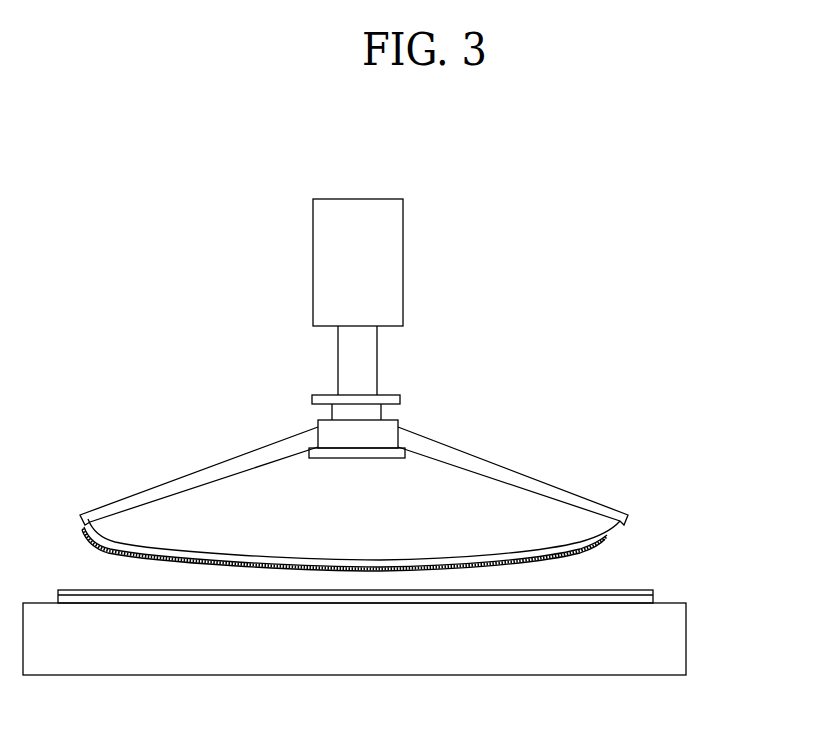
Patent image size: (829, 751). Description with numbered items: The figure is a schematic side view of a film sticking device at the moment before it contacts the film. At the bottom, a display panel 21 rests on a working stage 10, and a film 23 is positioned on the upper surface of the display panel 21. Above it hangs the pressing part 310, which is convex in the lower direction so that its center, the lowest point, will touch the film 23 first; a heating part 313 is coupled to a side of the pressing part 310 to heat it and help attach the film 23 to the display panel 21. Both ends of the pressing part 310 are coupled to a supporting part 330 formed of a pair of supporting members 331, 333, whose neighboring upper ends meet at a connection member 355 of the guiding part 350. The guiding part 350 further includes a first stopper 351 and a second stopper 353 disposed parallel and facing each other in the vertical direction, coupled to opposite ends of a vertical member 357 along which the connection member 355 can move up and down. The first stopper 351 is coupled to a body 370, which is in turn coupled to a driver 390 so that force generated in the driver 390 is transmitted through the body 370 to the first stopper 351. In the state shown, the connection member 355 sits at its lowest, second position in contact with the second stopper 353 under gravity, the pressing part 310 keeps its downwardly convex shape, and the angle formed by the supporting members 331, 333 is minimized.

The working stage 10 is at (672, 635).
The display panel 21 is at (646, 601).
The film 23 is at (638, 592).
The pressing part 310 is at (591, 538).
The heating part 313 is at (596, 551).
The supporting part 330 is at (440, 468).
The supporting member 331 is at (160, 491).
The supporting member 333 is at (550, 492).
The guiding part 350 is at (429, 403).
The first stopper 351 is at (398, 401).
The second stopper 353 is at (406, 439).
The connection member 355 is at (385, 433).
The vertical member 357 is at (375, 412).
The body 370 is at (348, 362).
The driver 390 is at (400, 249).